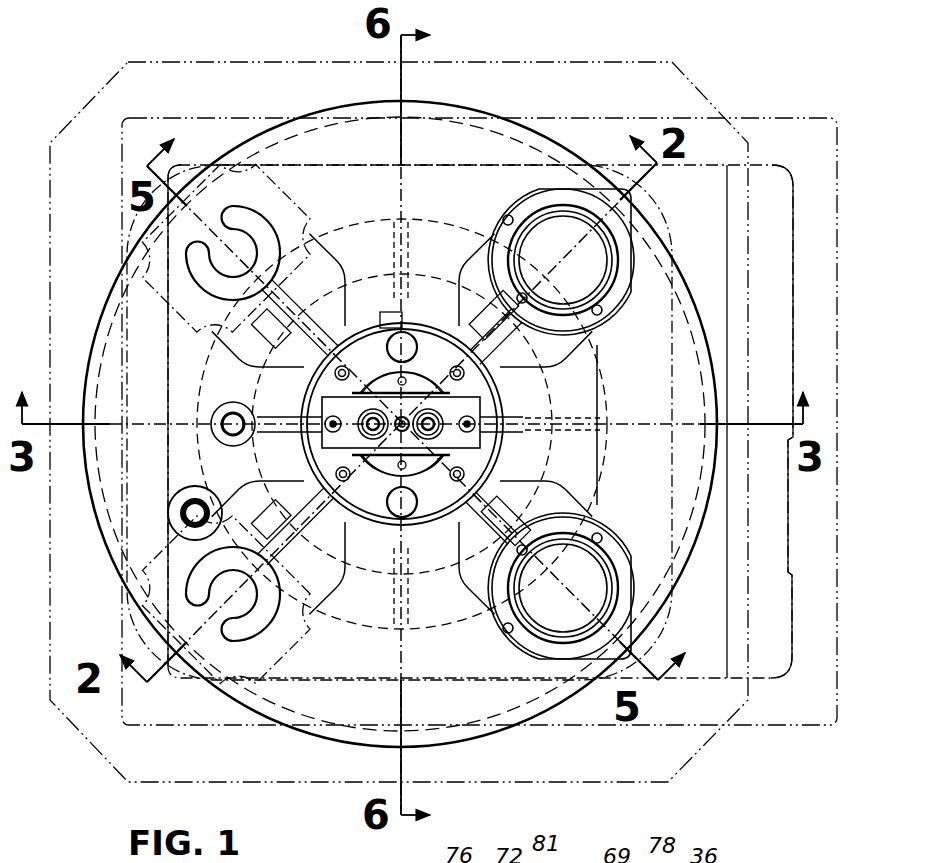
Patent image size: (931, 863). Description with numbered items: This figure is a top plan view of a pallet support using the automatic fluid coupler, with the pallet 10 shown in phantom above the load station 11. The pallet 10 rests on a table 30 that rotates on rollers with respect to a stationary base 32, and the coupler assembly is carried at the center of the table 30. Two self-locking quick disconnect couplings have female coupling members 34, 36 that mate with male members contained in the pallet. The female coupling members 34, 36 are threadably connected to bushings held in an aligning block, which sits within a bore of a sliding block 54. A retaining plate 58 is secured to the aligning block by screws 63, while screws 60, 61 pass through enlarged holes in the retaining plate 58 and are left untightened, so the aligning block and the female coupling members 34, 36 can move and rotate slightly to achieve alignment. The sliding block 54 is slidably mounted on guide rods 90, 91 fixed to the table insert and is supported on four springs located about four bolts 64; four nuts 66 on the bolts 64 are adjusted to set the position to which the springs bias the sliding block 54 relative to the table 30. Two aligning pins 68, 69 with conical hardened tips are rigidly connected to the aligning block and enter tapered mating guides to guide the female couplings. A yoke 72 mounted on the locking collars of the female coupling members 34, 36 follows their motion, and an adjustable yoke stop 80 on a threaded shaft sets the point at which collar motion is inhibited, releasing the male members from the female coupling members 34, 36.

The pallet 10 is at (204, 56).
The load station 11 is at (332, 756).
The table 30 is at (497, 735).
The base 32 is at (790, 733).
The female coupling member 34 is at (308, 400).
The female coupling member 36 is at (500, 395).
The sliding block 54 is at (383, 312).
The retaining plate 58 is at (521, 447).
The screw 60 is at (275, 400).
The screw 61 is at (600, 424).
The screws 63 is at (586, 363).
The bolts 64 is at (346, 368).
The nuts 66 is at (335, 338).
The aligning pin 68 is at (345, 490).
The aligning pin 69 is at (405, 333).
The yoke 72 is at (523, 410).
The yoke stop 80 is at (336, 525).
The guide rod 90 is at (408, 300).
The guide rod 91 is at (394, 527).